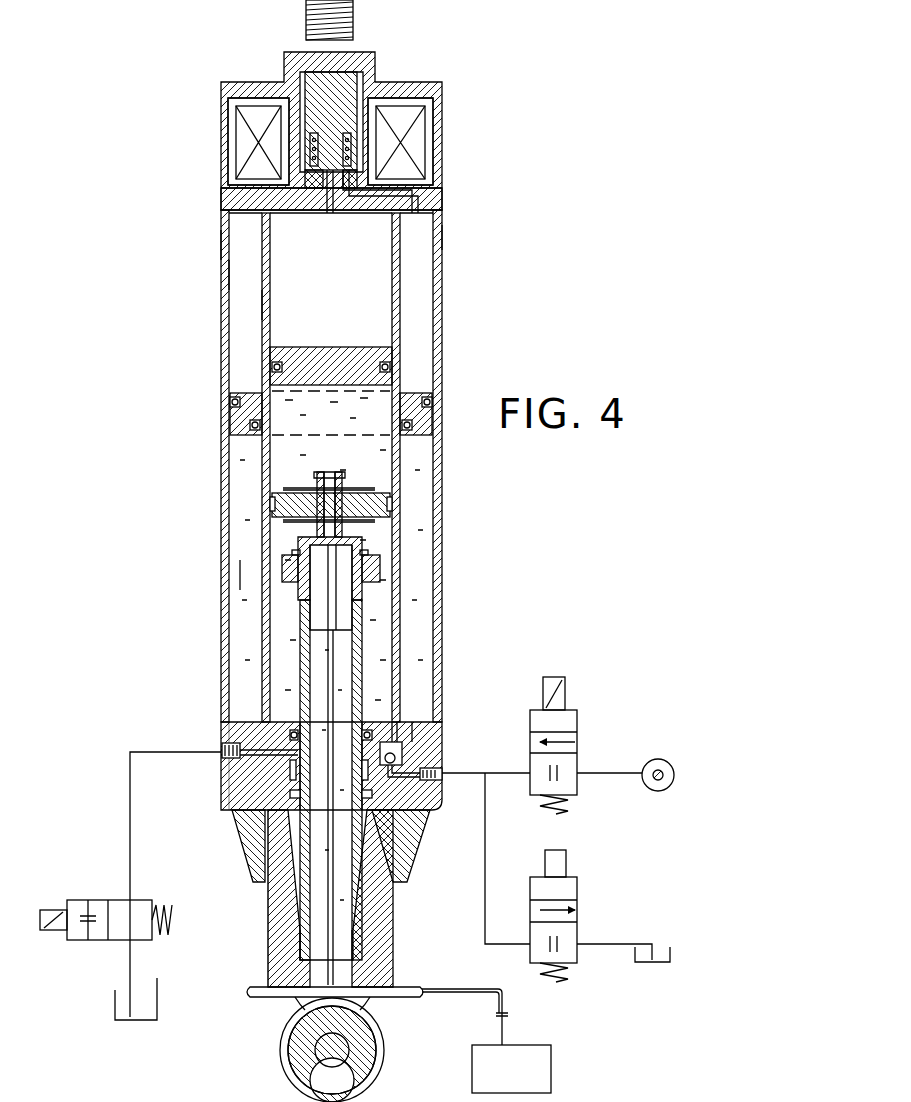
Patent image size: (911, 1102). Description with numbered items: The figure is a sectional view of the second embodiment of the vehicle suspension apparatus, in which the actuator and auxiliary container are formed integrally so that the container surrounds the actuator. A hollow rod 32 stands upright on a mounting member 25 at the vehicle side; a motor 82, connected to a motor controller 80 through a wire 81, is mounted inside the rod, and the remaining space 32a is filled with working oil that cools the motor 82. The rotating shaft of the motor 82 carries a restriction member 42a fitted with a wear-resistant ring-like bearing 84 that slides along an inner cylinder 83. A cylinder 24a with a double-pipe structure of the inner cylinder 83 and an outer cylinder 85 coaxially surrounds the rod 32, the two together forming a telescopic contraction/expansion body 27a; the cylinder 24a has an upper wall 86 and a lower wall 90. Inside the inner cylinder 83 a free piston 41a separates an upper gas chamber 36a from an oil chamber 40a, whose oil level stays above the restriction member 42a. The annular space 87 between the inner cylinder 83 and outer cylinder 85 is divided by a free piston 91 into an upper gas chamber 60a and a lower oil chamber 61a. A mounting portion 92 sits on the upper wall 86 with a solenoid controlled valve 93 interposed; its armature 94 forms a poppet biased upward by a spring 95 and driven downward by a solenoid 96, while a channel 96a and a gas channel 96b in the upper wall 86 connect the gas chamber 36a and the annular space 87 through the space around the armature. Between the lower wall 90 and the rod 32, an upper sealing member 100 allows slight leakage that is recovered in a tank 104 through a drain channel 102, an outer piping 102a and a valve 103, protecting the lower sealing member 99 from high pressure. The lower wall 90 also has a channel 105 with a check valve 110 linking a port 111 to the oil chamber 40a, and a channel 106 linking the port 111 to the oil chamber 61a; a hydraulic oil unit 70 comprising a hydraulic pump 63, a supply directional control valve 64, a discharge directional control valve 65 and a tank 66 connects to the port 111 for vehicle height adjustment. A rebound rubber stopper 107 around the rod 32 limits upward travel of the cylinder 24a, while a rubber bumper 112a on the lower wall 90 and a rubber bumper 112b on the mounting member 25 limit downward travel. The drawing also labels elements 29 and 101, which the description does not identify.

The mounting portion 92 is at (306, 16).
The armature 94 is at (330, 145).
The solenoid controlled valve 93 is at (214, 133).
The solenoid 96 is at (428, 120).
The spring 95 is at (352, 158).
The channel 96a is at (327, 213).
The gas channel 96b is at (362, 213).
The upper wall 86 is at (229, 205).
The contraction/expansion body 27a is at (446, 340).
The cylinder 24a is at (222, 246).
The outer cylinder 85 is at (439, 237).
The inner cylinder 83 is at (400, 262).
The upper gas chamber 60a is at (237, 273).
The annular space 87 is at (237, 305).
The gas chamber 36a is at (383, 292).
The oil chamber 40a is at (353, 395).
The free piston 41a is at (305, 352).
The free piston 91 is at (232, 422).
The hydraulic fluid 29 is at (385, 453).
The restriction member 42a is at (273, 485).
The ring-like bearing 84 is at (390, 505).
The rebound rubber stopper 107 is at (380, 565).
The motor 82 is at (312, 610).
The hollow rod 32 is at (305, 660).
The remaining space 32a is at (340, 908).
The lower oil chamber 61a is at (240, 575).
The sealing member 100 is at (262, 722).
The channel 105 is at (393, 722).
The channel 106 is at (413, 722).
The check valve 110 is at (402, 755).
The port 111 is at (442, 772).
The drain channel 102 is at (262, 790).
The seal 101 is at (290, 800).
The lower wall 90 is at (240, 808).
The outer piping 102a is at (130, 806).
The valve 103 is at (98, 900).
The tank 104 is at (115, 1000).
The sealing member 99 is at (245, 832).
The rubber bumper 112b is at (275, 965).
The rubber bumper 112a is at (252, 872).
The wire 81 is at (302, 932).
The mounting member 25 is at (281, 1045).
The hydraulic oil unit 70 is at (471, 790).
The directional control valve 64 is at (583, 735).
The hydraulic pump 63 is at (658, 759).
The directional control valve 65 is at (577, 888).
The tank 66 is at (668, 947).
The motor controller 80 is at (551, 1068).